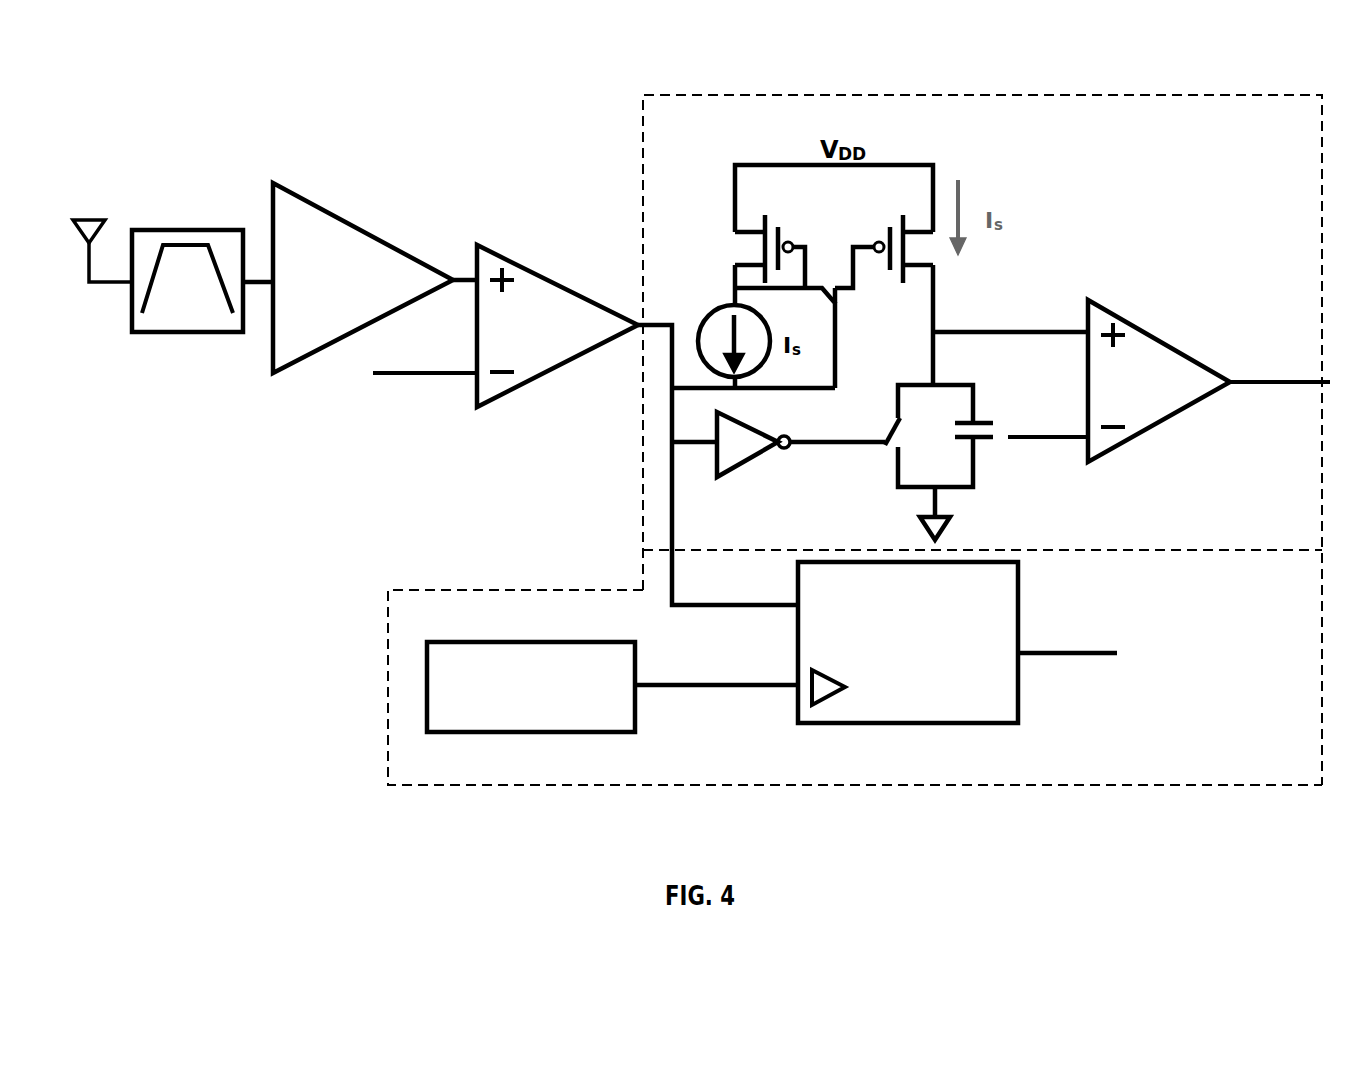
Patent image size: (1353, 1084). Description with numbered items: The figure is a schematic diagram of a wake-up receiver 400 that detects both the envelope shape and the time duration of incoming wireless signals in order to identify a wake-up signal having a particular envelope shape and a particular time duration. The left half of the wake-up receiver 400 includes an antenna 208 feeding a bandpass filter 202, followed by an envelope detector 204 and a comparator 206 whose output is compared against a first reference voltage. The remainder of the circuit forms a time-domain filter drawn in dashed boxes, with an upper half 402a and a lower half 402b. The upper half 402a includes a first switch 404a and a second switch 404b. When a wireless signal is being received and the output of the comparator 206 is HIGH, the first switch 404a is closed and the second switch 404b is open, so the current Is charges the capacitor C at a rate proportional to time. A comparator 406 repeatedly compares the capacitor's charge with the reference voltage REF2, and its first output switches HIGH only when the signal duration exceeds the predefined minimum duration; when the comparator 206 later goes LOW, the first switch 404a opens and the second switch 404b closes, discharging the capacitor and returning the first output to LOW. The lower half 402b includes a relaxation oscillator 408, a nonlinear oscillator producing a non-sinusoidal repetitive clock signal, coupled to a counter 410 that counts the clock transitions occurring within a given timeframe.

The wake-up receiver 400 is at (234, 572).
The bandpass filter 202 is at (195, 332).
The envelope detector 204 is at (353, 223).
The comparator 206 is at (547, 277).
The antenna 208 is at (90, 218).
The upper half of the time-domain filter 402a is at (640, 162).
The lower half of the time-domain filter 402b is at (532, 590).
The first switch 404a is at (850, 300).
The second switch 404b is at (908, 441).
The comparator 406 is at (1172, 340).
The relaxation oscillator 408 is at (520, 732).
The counter 410 is at (970, 723).